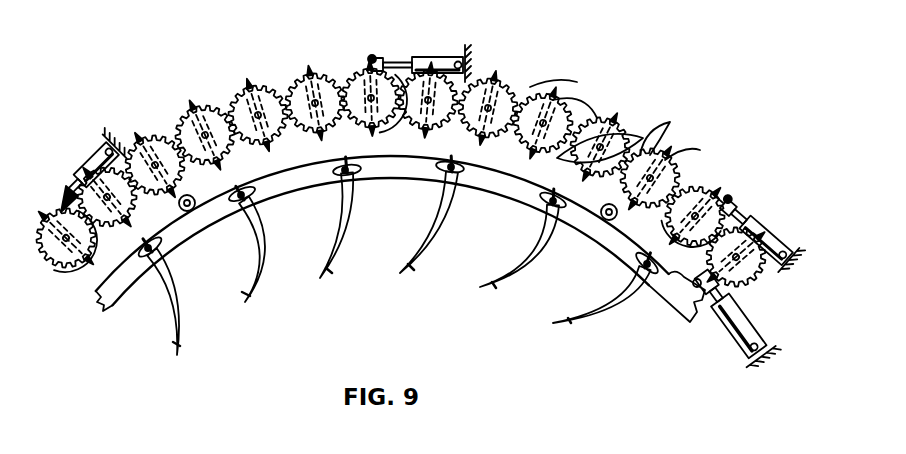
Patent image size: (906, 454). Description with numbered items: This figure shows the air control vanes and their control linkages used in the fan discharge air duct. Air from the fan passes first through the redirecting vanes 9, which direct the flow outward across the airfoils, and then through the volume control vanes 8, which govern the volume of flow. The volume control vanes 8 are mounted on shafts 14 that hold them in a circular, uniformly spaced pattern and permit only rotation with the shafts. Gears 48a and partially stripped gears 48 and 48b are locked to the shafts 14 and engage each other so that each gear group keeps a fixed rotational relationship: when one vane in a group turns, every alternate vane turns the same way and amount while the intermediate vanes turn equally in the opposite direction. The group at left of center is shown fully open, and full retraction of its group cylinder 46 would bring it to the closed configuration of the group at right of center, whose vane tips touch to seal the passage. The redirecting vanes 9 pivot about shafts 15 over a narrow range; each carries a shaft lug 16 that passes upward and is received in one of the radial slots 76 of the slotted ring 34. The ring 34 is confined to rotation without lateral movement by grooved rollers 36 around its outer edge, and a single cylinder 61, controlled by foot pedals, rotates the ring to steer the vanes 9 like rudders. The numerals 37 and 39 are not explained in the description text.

The volume control vanes 8 is at (671, 122).
The redirecting vanes 9 is at (451, 216).
The shafts 14 is at (603, 144).
The shafts 15 is at (418, 261).
The shaft lug 16 is at (458, 159).
The slotted ring 34 is at (123, 284).
The grooved rollers 36 is at (610, 245).
The end lug of band 37 is at (656, 280).
The clevis connections 39 is at (375, 58).
The group cylinder 46 is at (431, 57).
The partially stripped gears 48 is at (356, 84).
The gears 48a is at (421, 126).
The partially stripped gears 48b is at (597, 118).
The cylinder 61 is at (757, 328).
The radial slots 76 is at (360, 176).